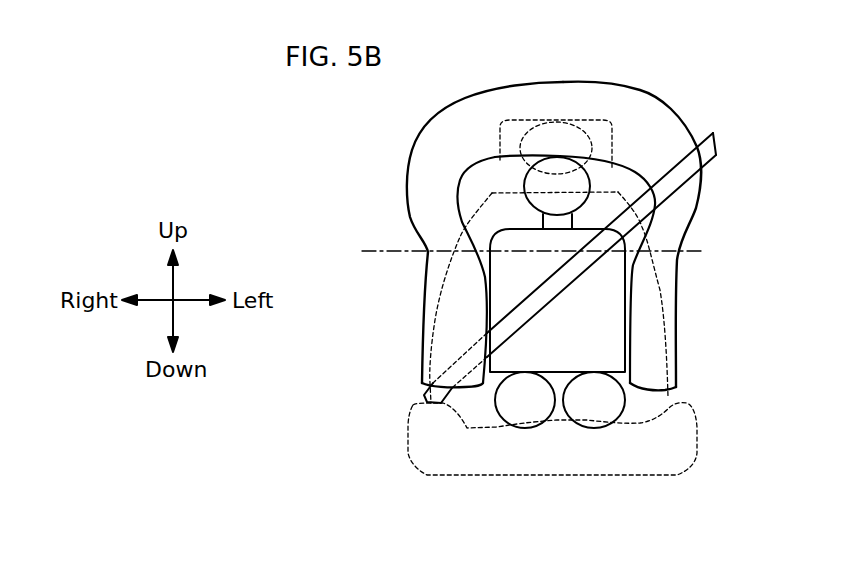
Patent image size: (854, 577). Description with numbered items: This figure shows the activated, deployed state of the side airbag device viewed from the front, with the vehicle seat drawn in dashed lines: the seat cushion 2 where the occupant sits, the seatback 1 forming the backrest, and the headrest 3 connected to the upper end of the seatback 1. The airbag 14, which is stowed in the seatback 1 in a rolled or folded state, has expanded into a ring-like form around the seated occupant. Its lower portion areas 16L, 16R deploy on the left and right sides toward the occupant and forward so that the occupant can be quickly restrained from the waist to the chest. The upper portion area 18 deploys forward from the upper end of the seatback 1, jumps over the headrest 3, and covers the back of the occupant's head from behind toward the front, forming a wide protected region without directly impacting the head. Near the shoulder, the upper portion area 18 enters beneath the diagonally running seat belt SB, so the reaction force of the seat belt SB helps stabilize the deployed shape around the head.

The seatback 1 is at (655, 262).
The seat cushion 2 is at (575, 476).
The headrest 3 is at (518, 127).
The airbag 14 is at (633, 90).
The upper portion area 18 is at (553, 88).
The lower portion area 16R is at (427, 302).
The lower portion area 16L is at (677, 313).
The seat belt SB is at (712, 132).